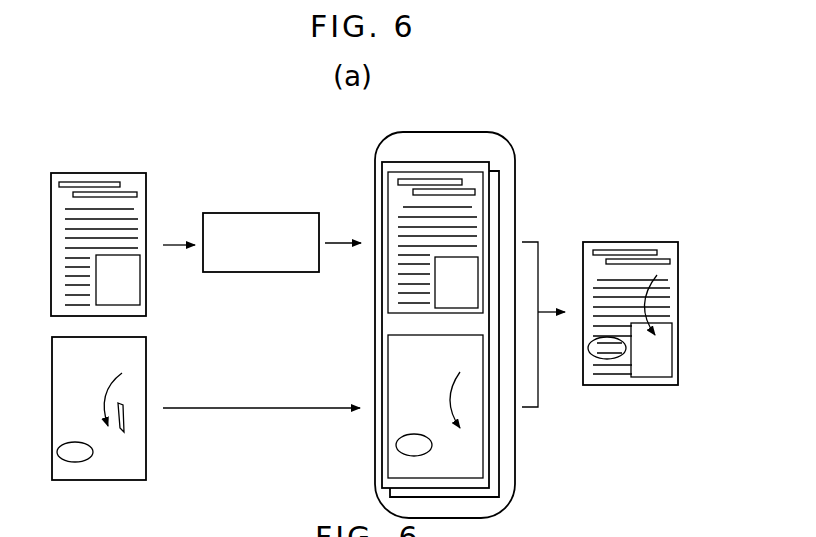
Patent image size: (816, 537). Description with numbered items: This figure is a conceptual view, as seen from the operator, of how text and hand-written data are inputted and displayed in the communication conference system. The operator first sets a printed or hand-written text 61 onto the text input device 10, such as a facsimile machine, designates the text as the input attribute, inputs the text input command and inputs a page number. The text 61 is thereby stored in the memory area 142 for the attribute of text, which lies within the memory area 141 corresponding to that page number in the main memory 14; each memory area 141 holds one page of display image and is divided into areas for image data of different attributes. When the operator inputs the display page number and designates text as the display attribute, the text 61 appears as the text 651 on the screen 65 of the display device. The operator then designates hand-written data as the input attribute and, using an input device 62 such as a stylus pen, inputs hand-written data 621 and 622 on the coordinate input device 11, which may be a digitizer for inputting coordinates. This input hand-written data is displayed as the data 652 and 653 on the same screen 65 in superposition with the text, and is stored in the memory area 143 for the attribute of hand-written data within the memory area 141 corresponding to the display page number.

The text 61 is at (112, 173).
The text input device 10 is at (270, 213).
The main memory 14 is at (458, 132).
The memory area 141 is at (484, 160).
The memory area for an attribute of text 142 is at (485, 193).
The memory area for an attribute of hand-written data 143 is at (483, 447).
The screen 65 is at (661, 314).
The text 651 is at (670, 252).
The data 652 is at (607, 360).
The data 653 is at (656, 314).
The coordinate input device 11 is at (146, 340).
The input device 62 is at (123, 415).
The hand-written data 621 is at (75, 462).
The hand-written data 622 is at (108, 390).